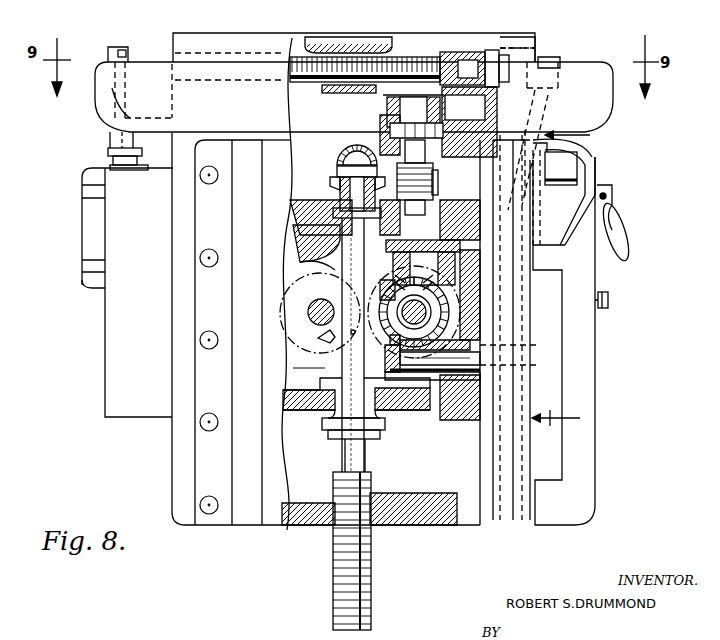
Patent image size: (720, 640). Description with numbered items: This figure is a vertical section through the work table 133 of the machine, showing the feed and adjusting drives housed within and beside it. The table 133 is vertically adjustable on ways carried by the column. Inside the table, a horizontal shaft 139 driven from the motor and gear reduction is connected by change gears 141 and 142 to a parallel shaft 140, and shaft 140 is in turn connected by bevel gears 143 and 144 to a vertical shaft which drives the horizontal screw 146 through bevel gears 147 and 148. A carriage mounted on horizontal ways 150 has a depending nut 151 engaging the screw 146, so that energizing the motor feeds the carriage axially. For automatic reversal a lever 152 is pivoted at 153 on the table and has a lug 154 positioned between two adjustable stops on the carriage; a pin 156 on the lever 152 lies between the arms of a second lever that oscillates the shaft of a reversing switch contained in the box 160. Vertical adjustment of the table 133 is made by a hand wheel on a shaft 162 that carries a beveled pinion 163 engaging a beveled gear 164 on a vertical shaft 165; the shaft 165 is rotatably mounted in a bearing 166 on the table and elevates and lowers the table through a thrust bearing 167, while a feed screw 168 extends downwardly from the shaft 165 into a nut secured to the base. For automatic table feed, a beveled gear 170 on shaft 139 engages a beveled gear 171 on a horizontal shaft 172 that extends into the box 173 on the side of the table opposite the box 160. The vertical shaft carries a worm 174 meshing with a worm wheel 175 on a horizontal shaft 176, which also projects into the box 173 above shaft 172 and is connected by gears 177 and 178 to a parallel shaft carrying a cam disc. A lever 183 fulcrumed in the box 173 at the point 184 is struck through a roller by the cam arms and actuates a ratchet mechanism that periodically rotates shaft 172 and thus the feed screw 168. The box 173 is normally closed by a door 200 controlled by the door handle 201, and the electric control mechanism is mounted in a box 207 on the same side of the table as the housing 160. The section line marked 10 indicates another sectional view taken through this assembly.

The section line 10- 10 is at (570, 276).
The work table 133 is at (170, 458).
The horizontal shaft 139 is at (320, 313).
The parallel shaft 140 is at (440, 300).
The change gear 141 is at (308, 362).
The change gear 142 is at (420, 312).
The bevel gear 143 is at (455, 305).
The bevel gear 144 is at (432, 270).
The horizontal screw 146 is at (410, 50).
The bevel gear 147 is at (387, 103).
The bevel gear 148 is at (488, 45).
The horizontal ways 150 is at (240, 33).
The depending nut 151 is at (343, 99).
The lever 152 is at (108, 152).
The pivot 153 is at (110, 88).
The lug 154 is at (128, 50).
The pin 156 is at (136, 168).
The box 160 is at (86, 222).
The shaft 162 is at (340, 153).
The beveled pinion 163 is at (336, 169).
The beveled gear 164 is at (338, 188).
The vertical shaft 165 is at (345, 268).
The bearing 166 is at (330, 410).
The thrust bearing 167 is at (382, 436).
The feed screw 168 is at (372, 562).
The beveled gear 170 is at (330, 340).
The beveled gear 171 is at (386, 424).
The horizontal shaft 172 is at (485, 352).
The box 173 is at (618, 322).
The worm 174 is at (437, 183).
The worm wheel 175 is at (388, 133).
The horizontal shaft 176 is at (508, 130).
The gear 177 is at (595, 152).
The gear 178 is at (560, 242).
The lever 183 is at (560, 165).
The fulcrum point 184 is at (560, 178).
The door 200 is at (600, 397).
The door handle 201 is at (620, 222).
The box 207 is at (117, 338).